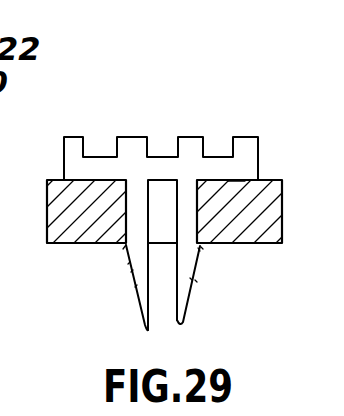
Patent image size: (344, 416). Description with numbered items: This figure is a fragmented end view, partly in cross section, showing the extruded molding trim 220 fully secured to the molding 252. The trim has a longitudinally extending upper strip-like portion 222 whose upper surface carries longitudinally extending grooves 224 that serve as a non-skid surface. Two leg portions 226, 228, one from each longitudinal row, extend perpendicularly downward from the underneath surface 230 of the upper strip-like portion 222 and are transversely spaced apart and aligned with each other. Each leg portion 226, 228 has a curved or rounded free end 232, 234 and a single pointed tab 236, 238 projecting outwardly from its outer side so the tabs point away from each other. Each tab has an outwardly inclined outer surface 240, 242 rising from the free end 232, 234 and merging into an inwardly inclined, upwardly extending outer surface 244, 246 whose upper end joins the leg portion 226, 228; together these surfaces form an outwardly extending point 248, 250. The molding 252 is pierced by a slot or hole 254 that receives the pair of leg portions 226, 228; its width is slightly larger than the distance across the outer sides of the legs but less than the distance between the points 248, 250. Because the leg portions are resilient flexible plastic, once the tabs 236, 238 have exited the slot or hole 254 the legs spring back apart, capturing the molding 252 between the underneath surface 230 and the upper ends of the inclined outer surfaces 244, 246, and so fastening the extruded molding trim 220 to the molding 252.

The extruded molding trim 220 is at (166, 82).
The upper strip-like portion 222 is at (260, 144).
The grooves 224 is at (126, 182).
The leg portion 226 is at (131, 205).
The leg portion 228 is at (197, 215).
The underneath surface 230 is at (233, 183).
The free end 232 is at (145, 325).
The free end 234 is at (183, 325).
The pointed tab 236 is at (131, 272).
The pointed tab 238 is at (190, 278).
The outwardly inclined outer surface 240 is at (135, 287).
The outwardly inclined outer surface 242 is at (197, 282).
The inwardly inclined outer surface 244 is at (123, 249).
The inwardly inclined outer surface 246 is at (200, 251).
The point 248 is at (128, 264).
The point 250 is at (203, 249).
The molding 252 is at (50, 238).
The slot or hole 254 is at (103, 157).